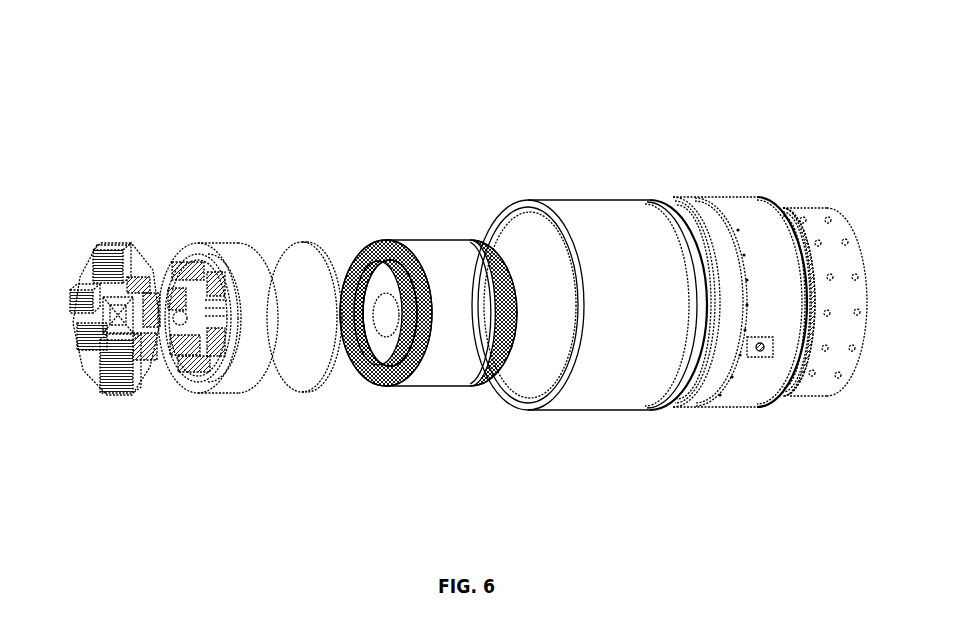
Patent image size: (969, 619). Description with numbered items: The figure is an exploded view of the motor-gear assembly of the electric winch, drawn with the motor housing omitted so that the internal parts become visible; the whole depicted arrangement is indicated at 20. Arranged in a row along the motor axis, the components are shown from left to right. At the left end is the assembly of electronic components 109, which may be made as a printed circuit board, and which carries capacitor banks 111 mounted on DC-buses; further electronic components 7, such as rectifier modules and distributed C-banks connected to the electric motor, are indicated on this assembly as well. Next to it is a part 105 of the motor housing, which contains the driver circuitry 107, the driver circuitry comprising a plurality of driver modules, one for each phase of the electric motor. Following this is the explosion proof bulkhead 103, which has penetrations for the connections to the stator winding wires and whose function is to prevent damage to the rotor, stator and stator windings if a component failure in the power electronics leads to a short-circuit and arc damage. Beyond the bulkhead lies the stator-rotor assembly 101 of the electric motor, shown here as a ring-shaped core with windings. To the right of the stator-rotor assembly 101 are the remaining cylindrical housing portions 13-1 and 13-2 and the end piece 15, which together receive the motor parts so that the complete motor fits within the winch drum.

The electric motor assembly 20 is at (777, 66).
The further electronic components 7 is at (75, 269).
The assembly of electronic components 109 is at (117, 236).
The capacitor banks 111 is at (140, 348).
The part of the motor housing 105 is at (240, 278).
The driver circuitry 107 is at (190, 336).
The explosion proof bulkhead 103 is at (310, 284).
The stator-rotor assembly 101 is at (458, 273).
The housing body 13-1 is at (598, 383).
The housing ring 13-2 is at (760, 375).
The end cap 15 is at (825, 370).